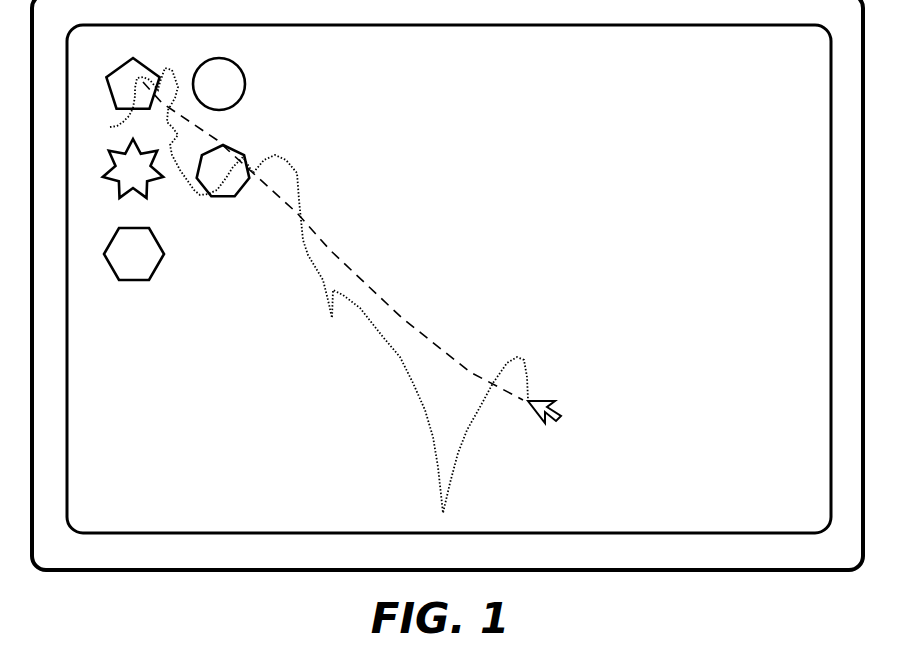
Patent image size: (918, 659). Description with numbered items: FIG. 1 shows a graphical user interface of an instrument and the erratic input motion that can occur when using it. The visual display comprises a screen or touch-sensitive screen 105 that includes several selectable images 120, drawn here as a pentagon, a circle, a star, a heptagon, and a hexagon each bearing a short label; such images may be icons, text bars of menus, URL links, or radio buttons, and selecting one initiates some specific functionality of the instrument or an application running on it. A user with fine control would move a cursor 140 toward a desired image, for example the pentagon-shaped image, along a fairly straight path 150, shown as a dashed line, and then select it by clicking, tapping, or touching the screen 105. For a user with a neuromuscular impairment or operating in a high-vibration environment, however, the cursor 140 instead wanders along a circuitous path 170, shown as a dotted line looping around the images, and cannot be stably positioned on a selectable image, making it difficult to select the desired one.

The screen 105 is at (748, 84).
The selectable images 120 is at (246, 153).
The fairly straight path 150 is at (402, 318).
The circuitous path 170 is at (412, 382).
The cursor 140 is at (558, 402).